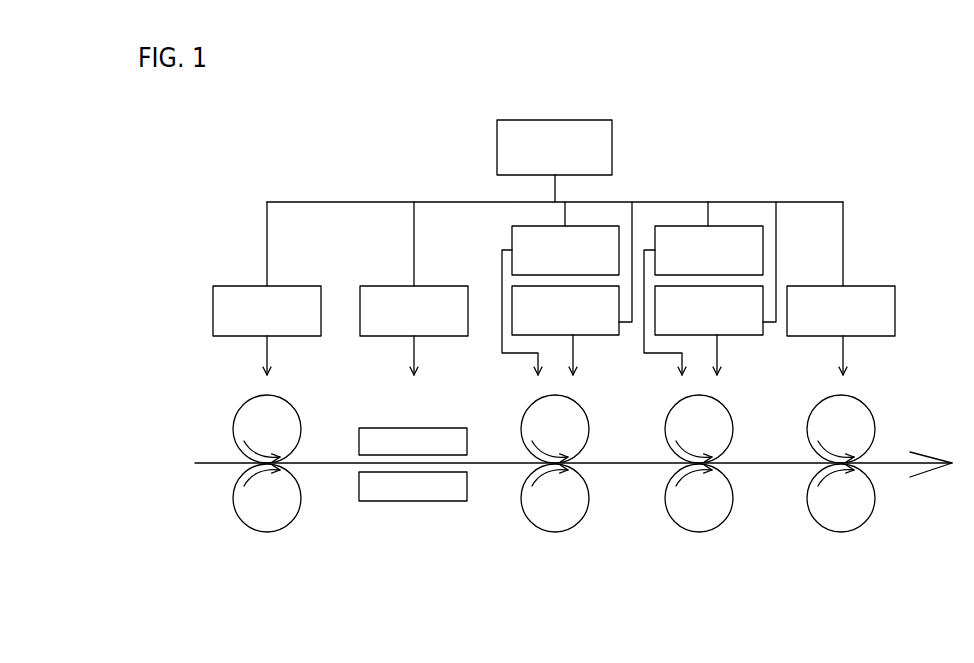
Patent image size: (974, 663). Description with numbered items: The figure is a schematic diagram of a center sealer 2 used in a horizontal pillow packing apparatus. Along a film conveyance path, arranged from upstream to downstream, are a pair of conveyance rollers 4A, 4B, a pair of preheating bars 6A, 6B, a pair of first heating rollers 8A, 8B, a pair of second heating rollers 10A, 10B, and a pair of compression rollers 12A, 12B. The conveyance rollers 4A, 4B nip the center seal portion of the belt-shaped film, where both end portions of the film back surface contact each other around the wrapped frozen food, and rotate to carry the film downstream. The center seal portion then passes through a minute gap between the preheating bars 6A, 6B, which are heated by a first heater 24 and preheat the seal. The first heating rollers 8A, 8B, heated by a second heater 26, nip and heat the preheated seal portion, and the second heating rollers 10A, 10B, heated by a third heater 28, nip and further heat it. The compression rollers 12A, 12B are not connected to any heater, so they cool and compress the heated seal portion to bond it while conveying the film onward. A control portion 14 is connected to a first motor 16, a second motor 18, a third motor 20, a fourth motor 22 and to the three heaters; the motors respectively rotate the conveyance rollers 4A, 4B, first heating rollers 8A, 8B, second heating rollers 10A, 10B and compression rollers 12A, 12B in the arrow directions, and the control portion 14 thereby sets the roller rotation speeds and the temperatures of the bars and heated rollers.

The center sealer 2 is at (303, 165).
The control portion 14 is at (612, 147).
The first motor 16 is at (242, 286).
The second motor 18 is at (597, 335).
The third motor 20 is at (742, 335).
The fourth motor 22 is at (895, 307).
The first heater 24 is at (384, 286).
The second heater 26 is at (512, 247).
The third heater 28 is at (742, 226).
The conveyance roller 4A is at (252, 413).
The conveyance roller 4B is at (248, 510).
The preheating bar 6A is at (439, 434).
The preheating bar 6B is at (415, 495).
The first heating roller 8A is at (585, 432).
The first heating roller 8B is at (555, 523).
The second heating roller 10A is at (729, 432).
The second heating roller 10B is at (699, 523).
The compression roller 12A is at (860, 412).
The compression roller 12B is at (840, 525).